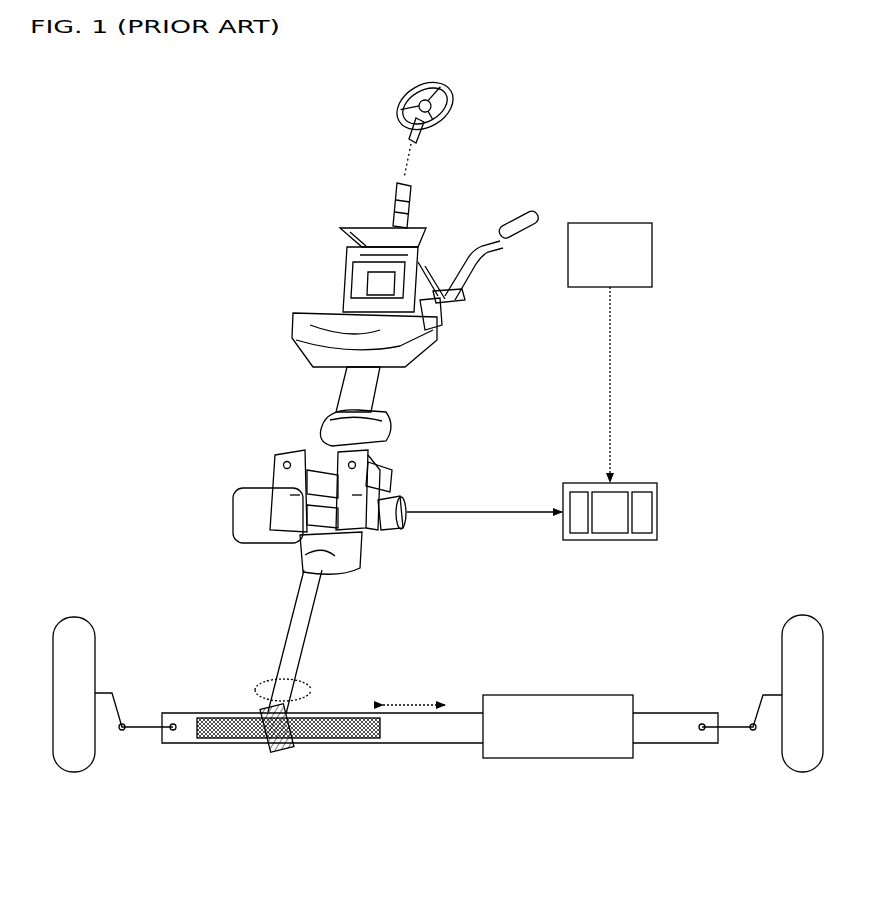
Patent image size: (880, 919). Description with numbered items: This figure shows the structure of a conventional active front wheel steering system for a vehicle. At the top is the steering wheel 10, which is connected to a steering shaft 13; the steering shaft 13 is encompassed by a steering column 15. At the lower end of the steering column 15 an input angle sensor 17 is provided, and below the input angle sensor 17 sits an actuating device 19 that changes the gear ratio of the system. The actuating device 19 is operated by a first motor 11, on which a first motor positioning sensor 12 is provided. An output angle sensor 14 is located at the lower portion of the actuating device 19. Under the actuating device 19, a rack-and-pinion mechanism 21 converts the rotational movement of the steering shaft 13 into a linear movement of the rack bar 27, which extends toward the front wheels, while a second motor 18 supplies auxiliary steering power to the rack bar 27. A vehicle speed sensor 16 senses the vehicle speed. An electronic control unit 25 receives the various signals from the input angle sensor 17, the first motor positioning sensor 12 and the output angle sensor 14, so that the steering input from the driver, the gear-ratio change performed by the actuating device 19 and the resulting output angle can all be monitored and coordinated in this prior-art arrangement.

The steering wheel 10 is at (456, 96).
The first motor 11 is at (258, 484).
The first motor positioning sensor 12 is at (406, 518).
The steering shaft 13 is at (397, 212).
The output angle sensor 14 is at (357, 571).
The steering column 15 is at (444, 253).
The vehicle speed sensor 16 is at (610, 223).
The input angle sensor 17 is at (386, 410).
The second motor 18 is at (587, 748).
The actuating device 19 is at (405, 469).
The rack-and-pinion mechanism 21 is at (292, 768).
The electronic control unit 25 is at (627, 483).
The rack bar 27 is at (423, 737).